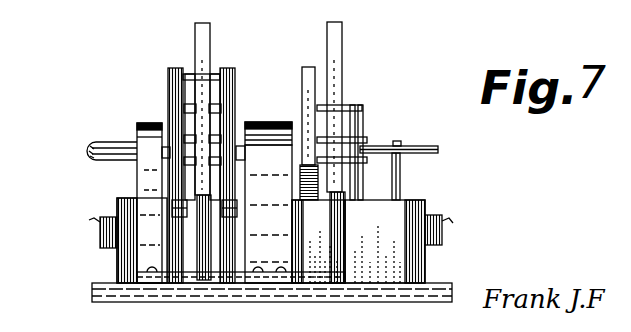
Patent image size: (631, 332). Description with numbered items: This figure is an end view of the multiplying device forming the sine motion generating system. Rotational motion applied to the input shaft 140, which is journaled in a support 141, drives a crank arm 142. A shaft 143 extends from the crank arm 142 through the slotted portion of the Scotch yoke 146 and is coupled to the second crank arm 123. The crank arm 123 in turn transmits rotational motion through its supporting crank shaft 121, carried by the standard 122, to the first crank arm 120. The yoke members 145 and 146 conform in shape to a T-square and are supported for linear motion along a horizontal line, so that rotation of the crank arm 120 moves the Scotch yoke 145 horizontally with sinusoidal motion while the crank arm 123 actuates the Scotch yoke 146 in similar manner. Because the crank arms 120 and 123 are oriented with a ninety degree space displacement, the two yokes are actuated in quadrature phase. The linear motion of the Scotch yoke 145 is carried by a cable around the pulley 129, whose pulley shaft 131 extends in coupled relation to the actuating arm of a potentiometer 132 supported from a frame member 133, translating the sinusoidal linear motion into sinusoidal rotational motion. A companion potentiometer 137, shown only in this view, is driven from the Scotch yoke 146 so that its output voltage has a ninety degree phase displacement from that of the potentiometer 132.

The first crank arm 120 is at (308, 67).
The crank shaft 121 is at (245, 124).
The standard 122 is at (262, 247).
The second crank arm 123 is at (228, 68).
The pulley 129 is at (424, 154).
The pulley shaft 131 is at (400, 143).
The potentiometer 132 is at (440, 238).
The frame member 133 is at (425, 202).
The companion potentiometer 137 is at (100, 228).
The input shaft 140 is at (100, 146).
The support 141 is at (150, 123).
The crank arm 142 is at (168, 72).
The shaft 143 is at (190, 70).
The Scotch yoke 145 is at (337, 34).
The Scotch yoke 146 is at (202, 23).